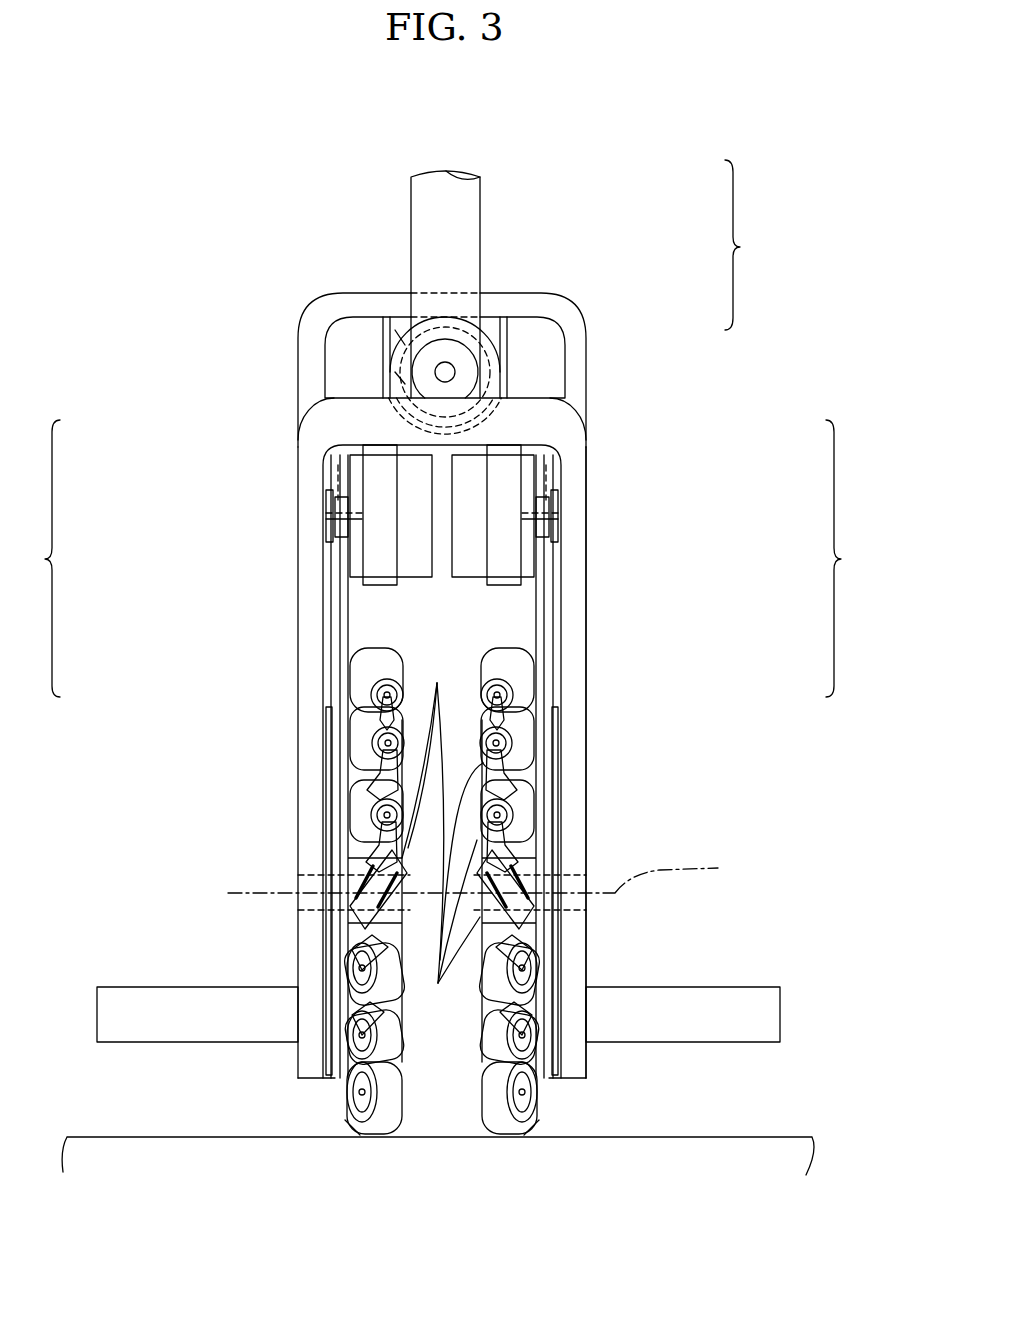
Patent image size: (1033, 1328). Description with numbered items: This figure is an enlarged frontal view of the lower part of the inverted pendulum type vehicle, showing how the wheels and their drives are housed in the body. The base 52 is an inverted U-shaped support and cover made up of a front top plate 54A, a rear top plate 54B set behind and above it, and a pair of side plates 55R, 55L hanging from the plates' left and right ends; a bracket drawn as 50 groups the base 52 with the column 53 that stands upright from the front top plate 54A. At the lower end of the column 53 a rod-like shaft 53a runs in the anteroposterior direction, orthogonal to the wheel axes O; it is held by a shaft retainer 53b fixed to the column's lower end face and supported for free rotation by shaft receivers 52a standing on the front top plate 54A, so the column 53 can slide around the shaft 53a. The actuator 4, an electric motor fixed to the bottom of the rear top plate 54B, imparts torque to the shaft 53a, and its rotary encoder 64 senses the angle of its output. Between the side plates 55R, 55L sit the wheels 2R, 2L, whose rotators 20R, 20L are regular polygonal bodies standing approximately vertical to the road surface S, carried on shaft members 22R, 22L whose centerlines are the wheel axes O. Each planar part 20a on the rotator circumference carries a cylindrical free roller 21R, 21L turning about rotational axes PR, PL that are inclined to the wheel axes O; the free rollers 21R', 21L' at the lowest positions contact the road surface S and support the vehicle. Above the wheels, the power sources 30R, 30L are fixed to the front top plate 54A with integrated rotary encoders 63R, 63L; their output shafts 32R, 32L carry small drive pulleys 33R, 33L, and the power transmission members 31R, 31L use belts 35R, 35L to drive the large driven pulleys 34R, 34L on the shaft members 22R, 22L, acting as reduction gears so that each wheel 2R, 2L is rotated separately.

The column 53 is at (467, 205).
The shaft 53a is at (446, 362).
The shaft retainer 53b is at (512, 336).
The front top plate 54A is at (493, 400).
The rear top plate 54B is at (373, 293).
The base 52 is at (574, 401).
The shaft receivers 52a is at (400, 340).
The support unit 50 is at (752, 245).
The actuator 4 is at (413, 297).
The rotary encoder 64 is at (400, 378).
The power source 30R is at (413, 467).
The power source 30L is at (475, 470).
The rotary encoder 63R is at (333, 455).
The rotary encoder 63L is at (560, 460).
The output shaft 32R is at (338, 465).
The output shaft 32L is at (546, 465).
The drive pulley 33R is at (331, 507).
The drive pulley 33L is at (553, 507).
The belt 35R is at (331, 573).
The belt 35L is at (553, 573).
The power transmission member 31R is at (171, 749).
The power transmission member 31L is at (719, 749).
The side plate 55R is at (307, 595).
The side plate 55L is at (578, 595).
The rotational axis PR is at (345, 665).
The rotational axis PL is at (539, 665).
The driven pulley 34R is at (328, 729).
The driven pulley 34L is at (556, 729).
The free rollers 21R is at (287, 766).
The free rollers 21L is at (596, 766).
The planar parts 20a is at (442, 836).
The wheel axes O is at (487, 869).
The shaft member 22R is at (312, 912).
The shaft member 22L is at (568, 912).
The road surface S is at (792, 1137).
The wheel 2R is at (336, 1104).
The wheel 2L is at (548, 1104).
The rotator 20R is at (412, 1035).
The rotator 20L is at (472, 1035).
The free roller 21R' is at (353, 1197).
The free roller 21L' is at (527, 1197).